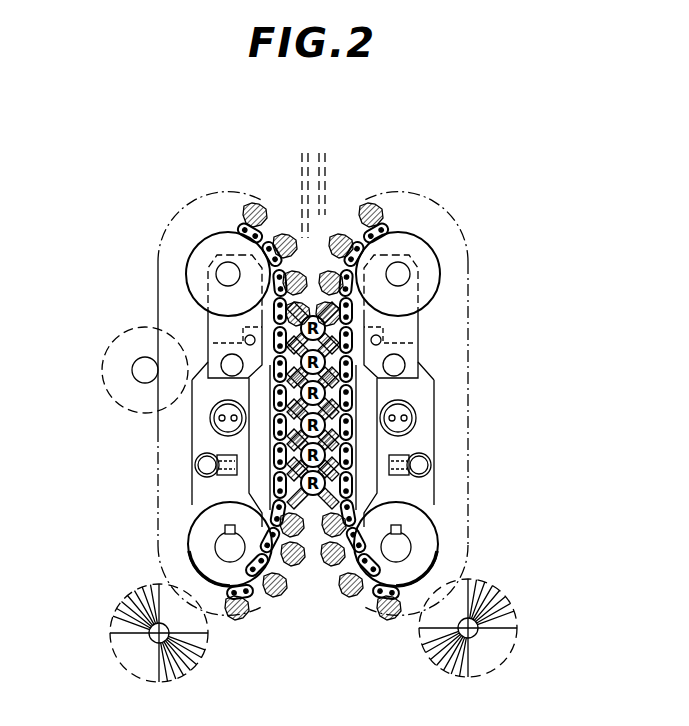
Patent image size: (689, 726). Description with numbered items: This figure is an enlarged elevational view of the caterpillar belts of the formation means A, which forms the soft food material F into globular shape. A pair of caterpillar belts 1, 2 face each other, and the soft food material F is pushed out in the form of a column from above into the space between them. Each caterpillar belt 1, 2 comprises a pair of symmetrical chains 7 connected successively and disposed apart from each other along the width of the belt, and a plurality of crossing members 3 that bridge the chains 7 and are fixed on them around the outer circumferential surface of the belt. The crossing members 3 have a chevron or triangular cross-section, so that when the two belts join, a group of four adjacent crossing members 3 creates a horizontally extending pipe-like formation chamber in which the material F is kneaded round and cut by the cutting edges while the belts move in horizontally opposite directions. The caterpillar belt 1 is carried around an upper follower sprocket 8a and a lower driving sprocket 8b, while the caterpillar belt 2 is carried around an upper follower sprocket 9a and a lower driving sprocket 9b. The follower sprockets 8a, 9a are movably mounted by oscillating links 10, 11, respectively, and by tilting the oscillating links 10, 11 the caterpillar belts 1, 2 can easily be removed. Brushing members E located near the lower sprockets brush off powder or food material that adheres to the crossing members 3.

The formation means A is at (160, 205).
The caterpillar belt 1 is at (160, 467).
The caterpillar belt 2 is at (469, 428).
The crossing member 3 is at (256, 205).
The chain 7 is at (238, 224).
The follower sprocket 8a is at (206, 257).
The driving sprocket 8b is at (207, 530).
The follower sprocket 9a is at (428, 274).
The driving sprocket 9b is at (425, 545).
The oscillating link 10 is at (212, 323).
The oscillating link 11 is at (405, 333).
The brushing member E is at (112, 612).
The soft food material F is at (300, 165).